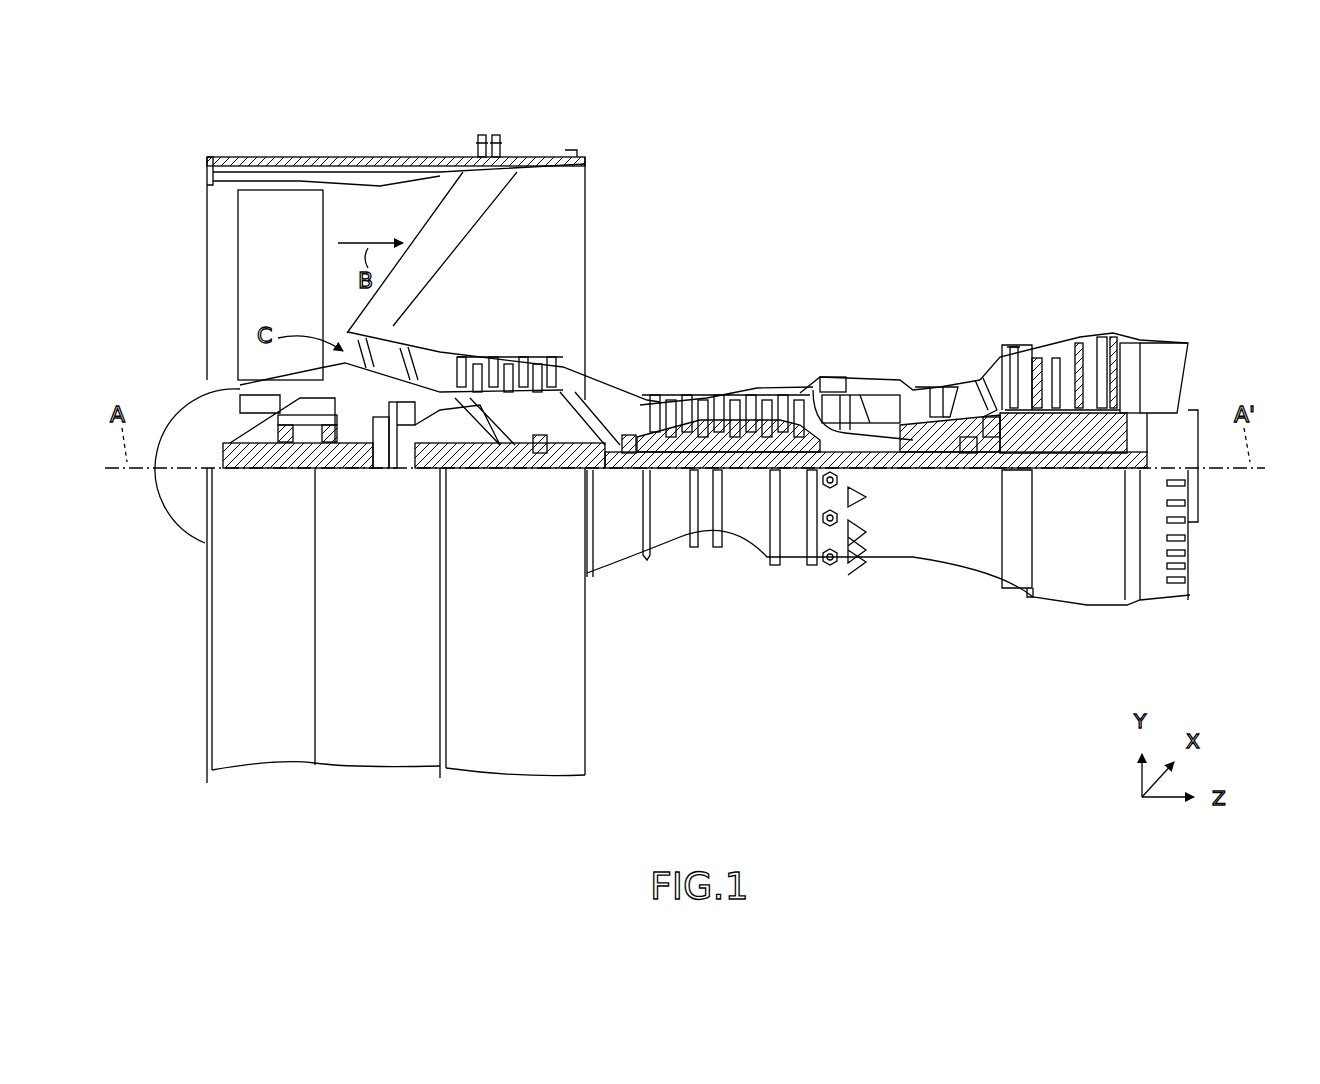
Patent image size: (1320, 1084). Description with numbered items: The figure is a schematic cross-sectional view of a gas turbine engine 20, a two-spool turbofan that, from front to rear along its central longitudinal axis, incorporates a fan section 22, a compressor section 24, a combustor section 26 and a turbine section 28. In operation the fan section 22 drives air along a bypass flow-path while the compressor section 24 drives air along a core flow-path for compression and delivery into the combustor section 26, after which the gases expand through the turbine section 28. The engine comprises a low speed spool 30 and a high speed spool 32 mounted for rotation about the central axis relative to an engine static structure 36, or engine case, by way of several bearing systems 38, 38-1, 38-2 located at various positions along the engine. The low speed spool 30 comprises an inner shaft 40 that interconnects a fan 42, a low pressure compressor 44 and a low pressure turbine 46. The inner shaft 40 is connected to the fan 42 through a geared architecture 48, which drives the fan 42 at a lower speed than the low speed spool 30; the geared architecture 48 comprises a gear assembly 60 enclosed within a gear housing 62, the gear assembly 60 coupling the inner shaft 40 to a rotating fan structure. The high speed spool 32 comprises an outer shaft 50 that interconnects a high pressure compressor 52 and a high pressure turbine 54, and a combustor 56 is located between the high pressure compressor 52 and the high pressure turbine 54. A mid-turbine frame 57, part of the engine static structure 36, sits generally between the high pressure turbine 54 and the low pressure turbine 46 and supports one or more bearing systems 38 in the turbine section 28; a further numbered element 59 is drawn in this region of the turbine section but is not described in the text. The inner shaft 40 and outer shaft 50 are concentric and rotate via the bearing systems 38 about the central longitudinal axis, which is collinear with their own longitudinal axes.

The gas turbine engine 20 is at (918, 188).
The fan section 22 is at (440, 140).
The compressor section 24 is at (450, 272).
The combustor section 26 is at (812, 272).
The turbine section 28 is at (1130, 272).
The low speed spool 30 is at (753, 480).
The high speed spool 32 is at (790, 432).
The engine static structure 36 is at (372, 745).
The bearing system 38 is at (968, 455).
The bearing system 38-1 is at (292, 451).
The bearing system 38-2 is at (546, 453).
The inner shaft 40 is at (607, 470).
The fan 42 is at (280, 285).
The low pressure compressor 44 is at (565, 355).
The low pressure turbine 46 is at (1062, 352).
The geared architecture 48 is at (405, 481).
The outer shaft 50 is at (866, 462).
The high pressure compressor 52 is at (738, 433).
The high pressure turbine 54 is at (940, 388).
The combustor 56 is at (862, 407).
The mid-turbine frame 57 is at (983, 395).
The airfoils / vanes 59 is at (985, 380).
The gear assembly 60 is at (420, 451).
The gear housing 62 is at (410, 430).